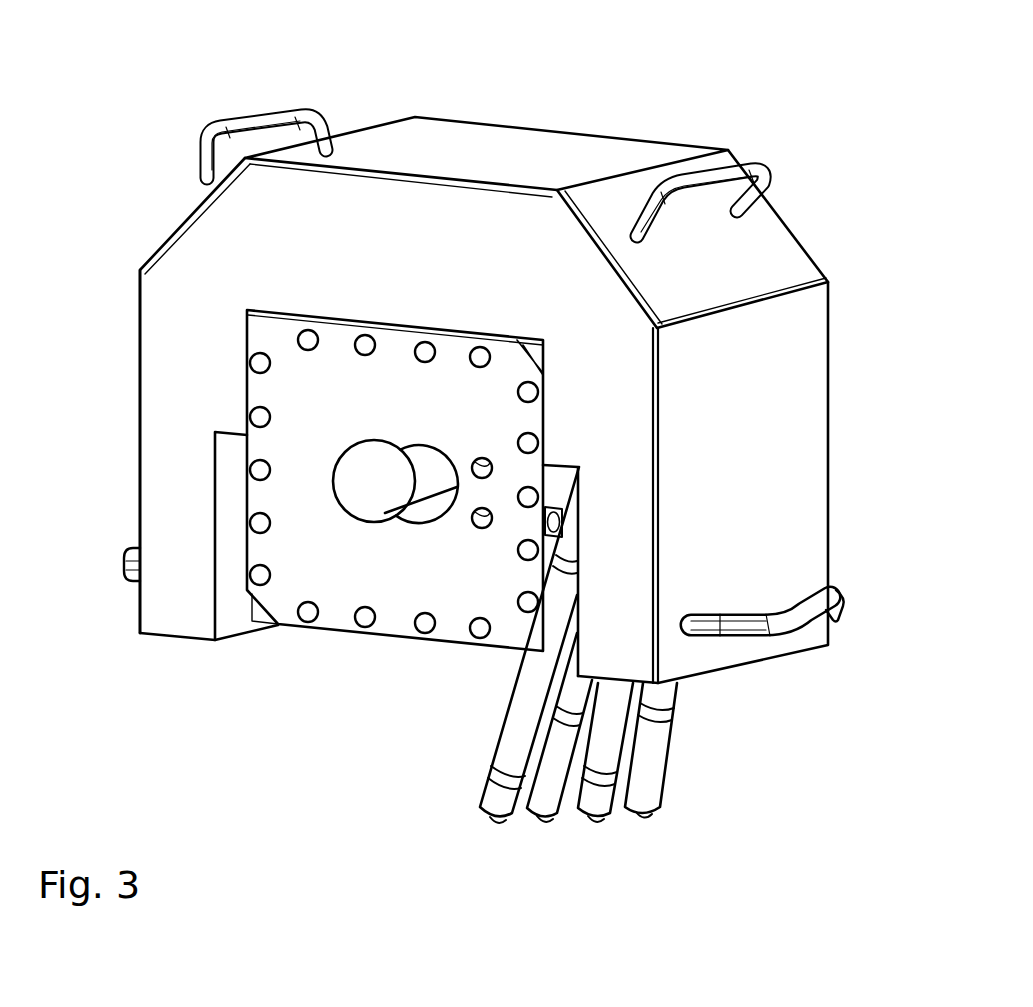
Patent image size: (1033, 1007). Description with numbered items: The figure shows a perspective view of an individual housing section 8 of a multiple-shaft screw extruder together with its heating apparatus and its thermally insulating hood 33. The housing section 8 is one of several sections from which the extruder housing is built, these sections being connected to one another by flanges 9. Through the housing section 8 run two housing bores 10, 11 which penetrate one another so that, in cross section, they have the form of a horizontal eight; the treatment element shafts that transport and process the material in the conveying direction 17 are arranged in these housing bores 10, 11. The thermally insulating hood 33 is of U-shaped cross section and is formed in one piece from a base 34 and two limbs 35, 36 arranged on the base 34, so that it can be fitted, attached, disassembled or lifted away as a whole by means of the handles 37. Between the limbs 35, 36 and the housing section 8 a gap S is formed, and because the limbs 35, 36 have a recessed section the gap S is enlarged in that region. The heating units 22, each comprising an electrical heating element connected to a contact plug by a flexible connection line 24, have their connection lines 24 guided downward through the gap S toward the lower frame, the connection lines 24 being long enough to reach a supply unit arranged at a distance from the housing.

The conveying direction 17 is at (252, 80).
The thermally insulating hood 33 is at (477, 110).
The base 34 is at (375, 258).
The limb 35 is at (160, 440).
The limb 36 is at (805, 522).
The handle 37 is at (205, 152).
The housing section 8 is at (354, 594).
The flange 9 is at (387, 622).
The housing bore 10 is at (365, 492).
The housing bore 11 is at (428, 510).
The gap S is at (578, 474).
The heating unit 22 is at (680, 763).
The connection line 24 is at (653, 737).